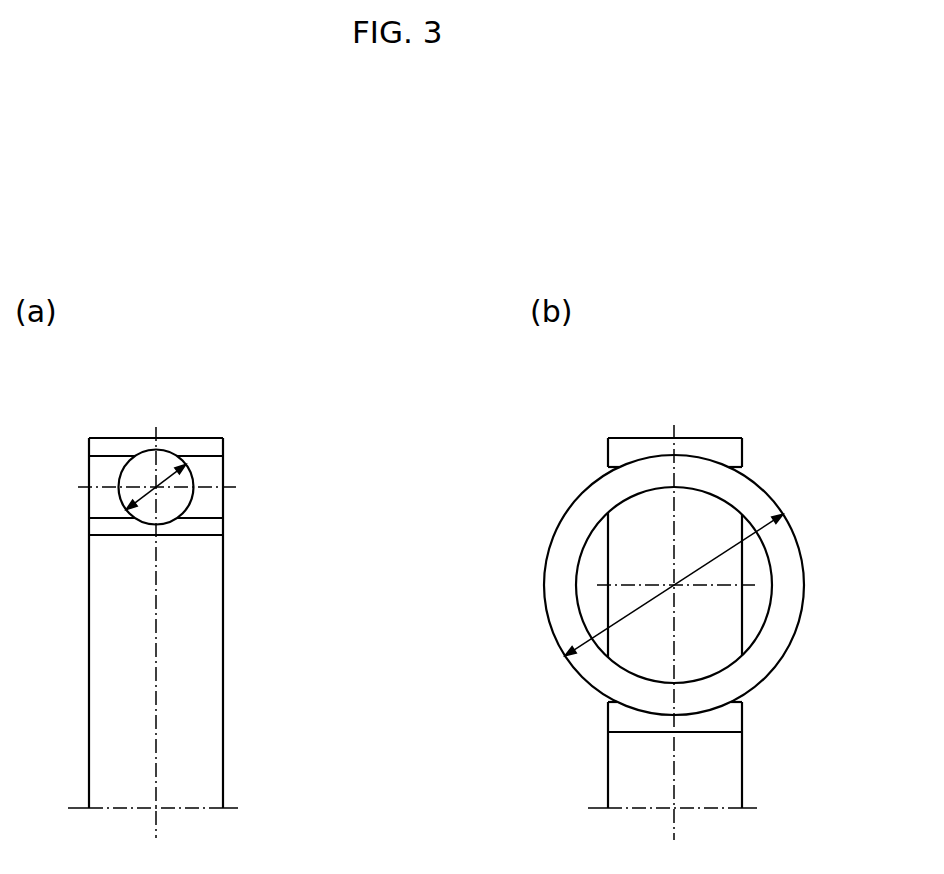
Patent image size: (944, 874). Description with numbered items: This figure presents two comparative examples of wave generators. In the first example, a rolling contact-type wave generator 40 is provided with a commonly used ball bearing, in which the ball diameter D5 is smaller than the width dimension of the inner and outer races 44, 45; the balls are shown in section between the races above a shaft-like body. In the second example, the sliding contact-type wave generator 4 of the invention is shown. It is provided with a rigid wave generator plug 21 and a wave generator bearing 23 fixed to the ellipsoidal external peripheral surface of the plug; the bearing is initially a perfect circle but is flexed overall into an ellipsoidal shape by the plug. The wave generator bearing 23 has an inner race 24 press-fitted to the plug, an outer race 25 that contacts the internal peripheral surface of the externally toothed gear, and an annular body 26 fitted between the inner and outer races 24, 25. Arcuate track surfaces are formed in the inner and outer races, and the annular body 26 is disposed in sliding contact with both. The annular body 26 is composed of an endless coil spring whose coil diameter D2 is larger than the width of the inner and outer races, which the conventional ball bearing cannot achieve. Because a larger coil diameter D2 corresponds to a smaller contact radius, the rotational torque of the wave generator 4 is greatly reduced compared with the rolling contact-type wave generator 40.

The rolling contact-type wave generator 40 is at (294, 512).
The outer race 45 is at (200, 445).
The inner race 44 is at (207, 527).
The ball diameter D5 is at (148, 495).
The wave generator 4 is at (702, 427).
The outer race 25 is at (727, 452).
The wave generator bearing 23 is at (541, 538).
The annular body 26 is at (807, 621).
The coil diameter D2 is at (720, 552).
The inner race 24 is at (733, 721).
The wave generator plug 21 is at (754, 779).